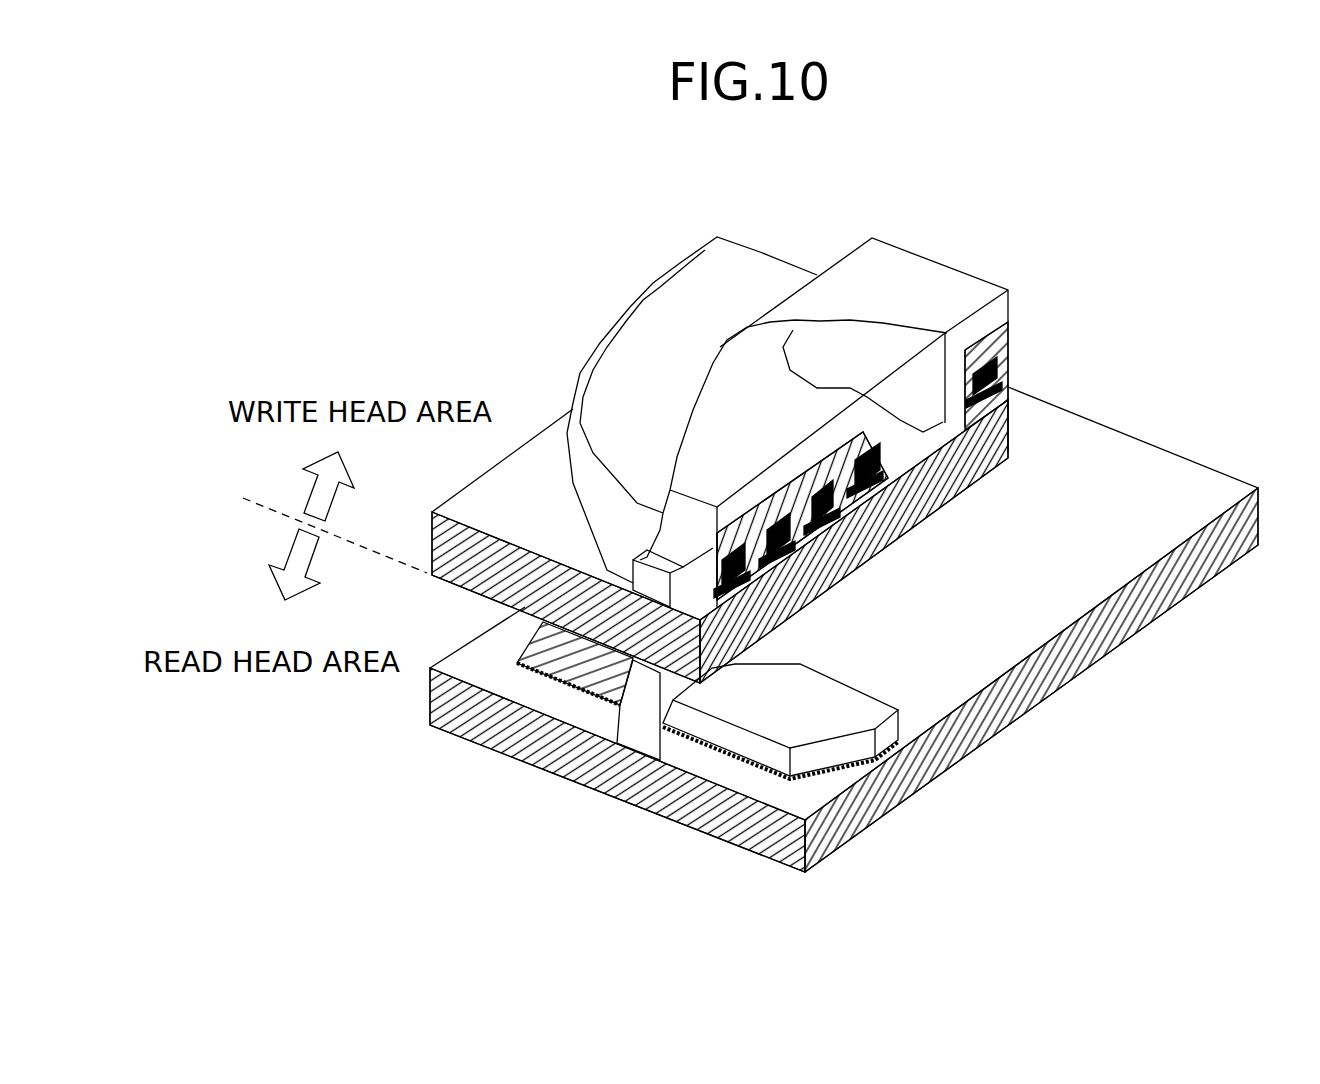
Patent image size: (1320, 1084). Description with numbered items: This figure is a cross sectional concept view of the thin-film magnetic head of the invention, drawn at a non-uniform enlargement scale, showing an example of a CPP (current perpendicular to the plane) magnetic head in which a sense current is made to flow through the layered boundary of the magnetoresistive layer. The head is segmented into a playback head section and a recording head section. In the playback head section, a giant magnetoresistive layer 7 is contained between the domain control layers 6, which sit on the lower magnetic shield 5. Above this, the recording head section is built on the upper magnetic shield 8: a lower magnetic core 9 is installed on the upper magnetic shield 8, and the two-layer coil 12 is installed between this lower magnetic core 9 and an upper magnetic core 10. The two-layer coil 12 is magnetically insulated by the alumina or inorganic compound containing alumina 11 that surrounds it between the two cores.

The lower magnetic shield 5 is at (955, 760).
The domain control layers 6 is at (733, 737).
The giant magnetoresistive layer 7 is at (643, 712).
The upper magnetic shield 8 is at (430, 530).
The lower magnetic core 9 is at (813, 543).
The upper magnetic core 10 is at (950, 313).
The alumina or inorganic compound containing alumina 11 is at (852, 440).
The two-layer coil 12 is at (885, 452).